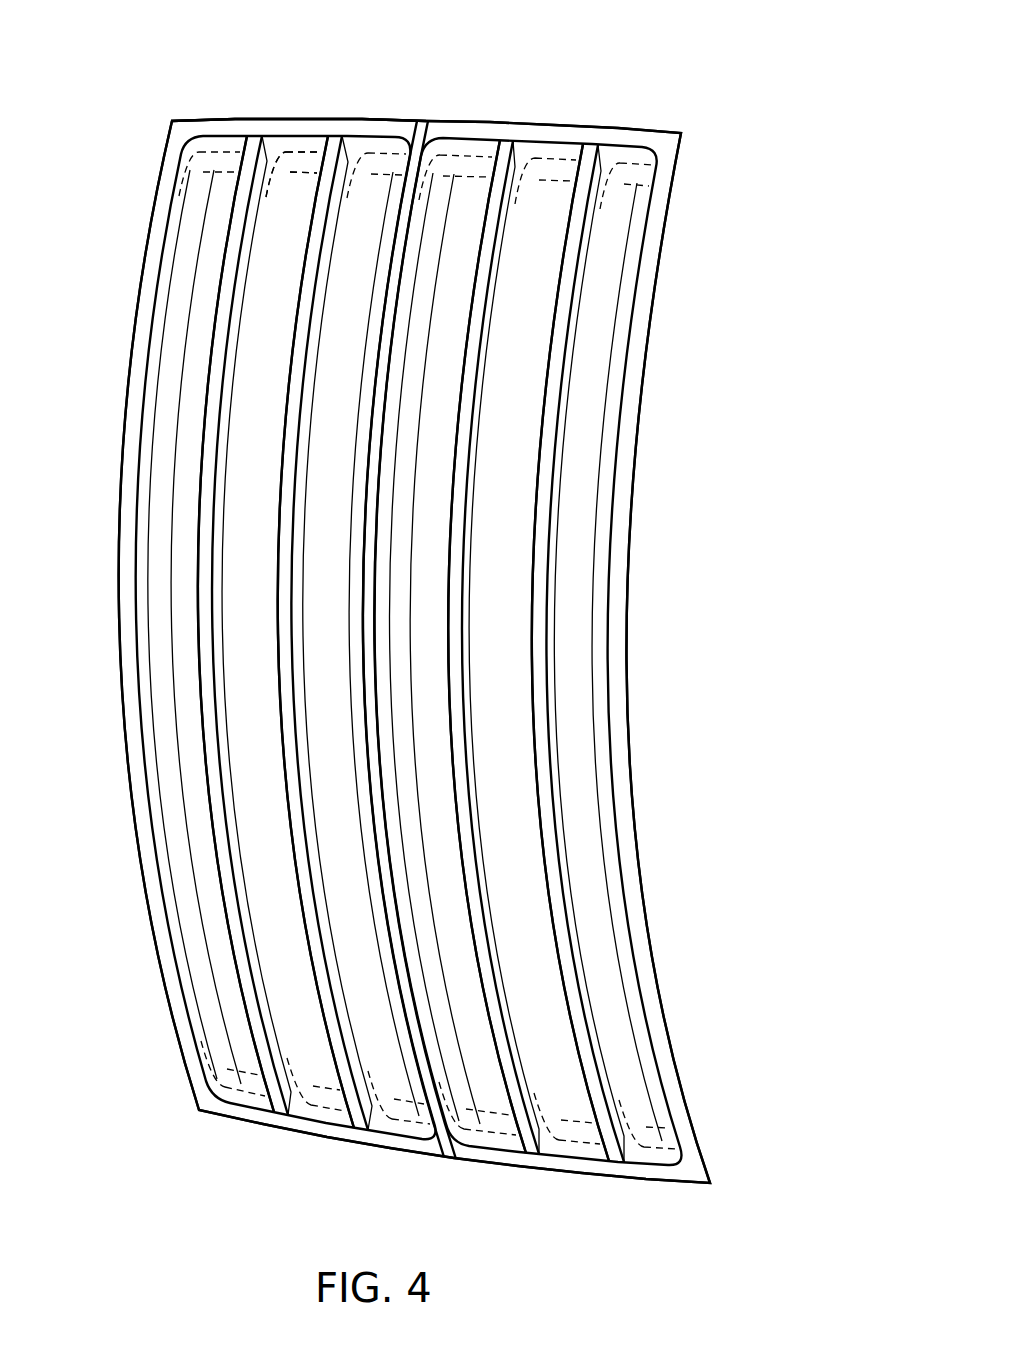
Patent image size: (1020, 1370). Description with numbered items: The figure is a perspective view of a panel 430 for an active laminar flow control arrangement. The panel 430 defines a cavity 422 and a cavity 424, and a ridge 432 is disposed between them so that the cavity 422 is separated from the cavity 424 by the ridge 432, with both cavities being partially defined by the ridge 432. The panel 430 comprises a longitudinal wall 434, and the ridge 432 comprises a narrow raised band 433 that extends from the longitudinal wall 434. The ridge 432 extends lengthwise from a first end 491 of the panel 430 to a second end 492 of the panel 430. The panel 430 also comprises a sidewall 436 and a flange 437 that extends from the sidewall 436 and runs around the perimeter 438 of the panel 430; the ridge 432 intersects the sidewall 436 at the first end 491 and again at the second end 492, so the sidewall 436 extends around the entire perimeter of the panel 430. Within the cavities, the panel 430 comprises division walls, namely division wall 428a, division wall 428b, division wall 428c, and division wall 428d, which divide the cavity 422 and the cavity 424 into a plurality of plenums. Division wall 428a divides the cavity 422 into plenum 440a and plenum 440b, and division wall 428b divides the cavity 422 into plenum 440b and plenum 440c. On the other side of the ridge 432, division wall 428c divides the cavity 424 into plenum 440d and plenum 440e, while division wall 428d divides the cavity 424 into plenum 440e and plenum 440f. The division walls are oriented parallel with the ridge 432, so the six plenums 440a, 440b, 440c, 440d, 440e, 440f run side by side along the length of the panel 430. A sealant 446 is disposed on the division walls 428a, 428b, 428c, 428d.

The panel 430 is at (119, 84).
The first end 491 is at (410, 88).
The second end 492 is at (491, 1183).
The flange 437 is at (303, 120).
The perimeter 438 is at (441, 119).
The sidewall 436 is at (297, 143).
The narrow raised band 433 is at (405, 208).
The ridge 432 is at (392, 282).
The division wall 428a is at (228, 393).
The division wall 428b is at (308, 443).
The division wall 428c is at (470, 508).
The division wall 428d is at (555, 567).
The sealant 446 is at (205, 633).
The longitudinal wall 434 is at (255, 775).
The plenum 440a is at (206, 624).
The plenum 440b is at (298, 631).
The plenum 440c is at (380, 638).
The plenum 440d is at (452, 645).
The plenum 440e is at (548, 651).
The plenum 440f is at (625, 656).
The cavity 422 is at (313, 1066).
The cavity 424 is at (568, 1106).